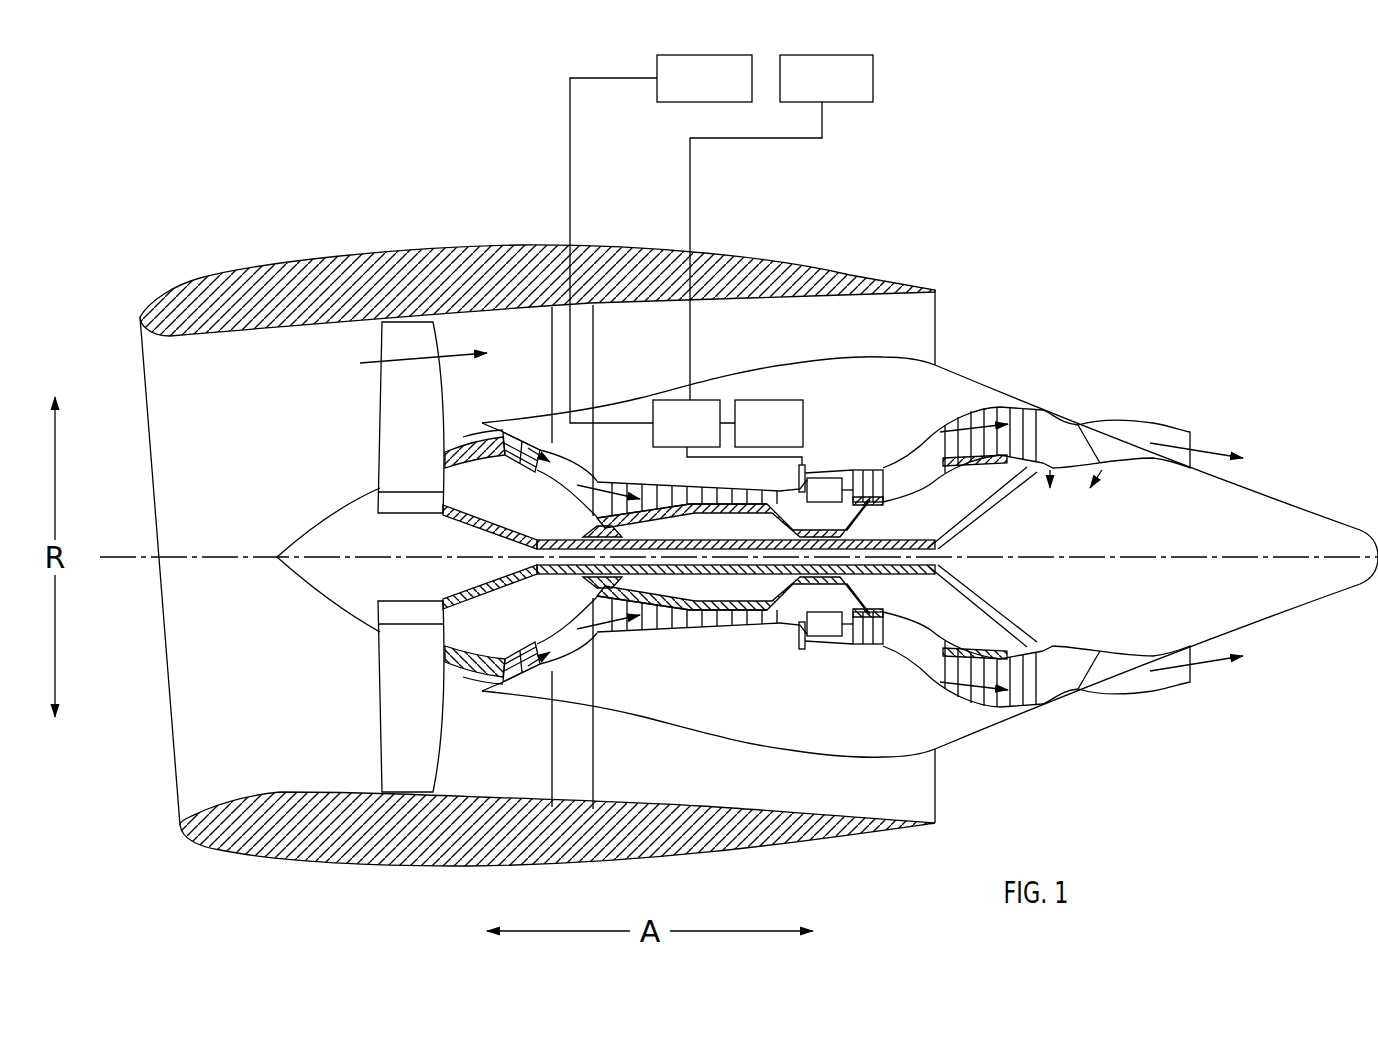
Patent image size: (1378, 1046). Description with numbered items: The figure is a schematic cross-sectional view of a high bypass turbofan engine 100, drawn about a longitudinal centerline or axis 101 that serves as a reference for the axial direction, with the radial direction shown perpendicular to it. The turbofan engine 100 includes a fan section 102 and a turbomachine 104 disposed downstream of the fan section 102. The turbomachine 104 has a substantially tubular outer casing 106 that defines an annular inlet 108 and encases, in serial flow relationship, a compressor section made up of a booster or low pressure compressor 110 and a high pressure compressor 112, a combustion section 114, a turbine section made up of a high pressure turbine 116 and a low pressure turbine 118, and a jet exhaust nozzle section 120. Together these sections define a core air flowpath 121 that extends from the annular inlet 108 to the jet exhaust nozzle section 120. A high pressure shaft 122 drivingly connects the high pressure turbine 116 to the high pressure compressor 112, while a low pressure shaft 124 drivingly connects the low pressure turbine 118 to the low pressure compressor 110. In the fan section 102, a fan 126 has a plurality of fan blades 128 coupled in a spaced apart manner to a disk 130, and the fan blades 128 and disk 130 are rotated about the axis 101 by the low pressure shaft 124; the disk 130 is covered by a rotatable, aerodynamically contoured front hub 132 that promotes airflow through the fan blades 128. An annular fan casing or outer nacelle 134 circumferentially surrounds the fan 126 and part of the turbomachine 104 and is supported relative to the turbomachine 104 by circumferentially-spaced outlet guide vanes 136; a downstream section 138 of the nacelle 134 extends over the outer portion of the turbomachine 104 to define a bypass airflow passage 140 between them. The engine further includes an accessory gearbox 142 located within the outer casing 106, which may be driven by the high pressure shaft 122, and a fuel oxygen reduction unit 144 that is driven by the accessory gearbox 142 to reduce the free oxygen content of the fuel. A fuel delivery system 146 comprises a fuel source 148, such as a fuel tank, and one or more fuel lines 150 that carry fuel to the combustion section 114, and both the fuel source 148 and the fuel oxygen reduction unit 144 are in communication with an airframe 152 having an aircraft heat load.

The turbofan engine 100 is at (1095, 258).
The longitudinal centerline or axis 101 is at (1157, 557).
The fan section 102 is at (332, 338).
The turbomachine 104 is at (715, 355).
The outer casing 106 is at (775, 740).
The annular inlet 108 is at (500, 673).
The low pressure compressor 110 is at (527, 692).
The high pressure compressor 112 is at (630, 625).
The combustion section 114 is at (825, 635).
The high pressure turbine 116 is at (890, 640).
The low pressure turbine 118 is at (1027, 700).
The jet exhaust nozzle section 120 is at (1093, 670).
The core air flowpath 121 is at (577, 640).
The high pressure shaft 122 is at (822, 530).
The low pressure shaft 124 is at (885, 540).
The fan 126 is at (318, 420).
The fan blades 128 is at (375, 725).
The disk 130 is at (397, 507).
The front hub 132 is at (165, 625).
The outer nacelle 134 is at (433, 865).
The outlet guide vanes 136 is at (593, 340).
The downstream section of the nacelle 138 is at (850, 275).
The bypass airflow passage 140 is at (970, 330).
The accessory gearbox 142 is at (749, 441).
The fuel oxygen reduction unit 144 is at (667, 441).
The fuel delivery system 146 is at (488, 112).
The fuel source 148 is at (685, 96).
The fuel lines 150 is at (570, 195).
The airframe 152 is at (806, 96).